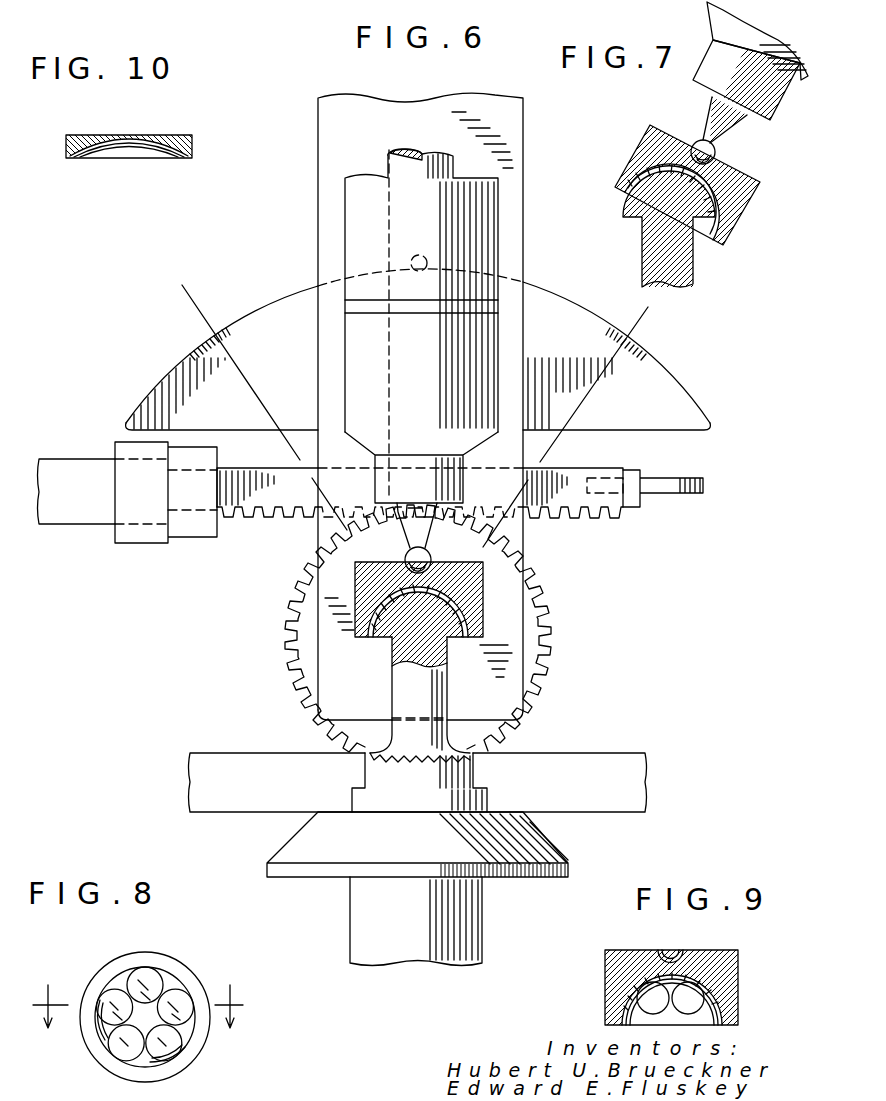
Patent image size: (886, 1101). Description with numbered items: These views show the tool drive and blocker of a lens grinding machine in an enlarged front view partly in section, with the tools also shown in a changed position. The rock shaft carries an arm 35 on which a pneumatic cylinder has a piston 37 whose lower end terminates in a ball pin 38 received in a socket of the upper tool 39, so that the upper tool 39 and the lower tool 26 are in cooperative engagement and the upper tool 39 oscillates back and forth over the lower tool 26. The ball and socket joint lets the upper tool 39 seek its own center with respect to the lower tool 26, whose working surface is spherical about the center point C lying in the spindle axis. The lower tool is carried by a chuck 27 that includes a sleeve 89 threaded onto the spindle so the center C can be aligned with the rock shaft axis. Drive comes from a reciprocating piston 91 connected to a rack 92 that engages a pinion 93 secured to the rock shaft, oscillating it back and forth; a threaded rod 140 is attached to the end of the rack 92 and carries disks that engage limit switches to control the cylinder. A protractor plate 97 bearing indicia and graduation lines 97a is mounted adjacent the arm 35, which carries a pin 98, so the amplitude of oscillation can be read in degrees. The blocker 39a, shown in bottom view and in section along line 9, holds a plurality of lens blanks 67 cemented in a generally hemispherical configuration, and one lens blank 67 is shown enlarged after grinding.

In FIG. 6, the lower tool 26 is at (440, 698).
In FIG. 7, the lower tool 26 is at (695, 270).
In FIG. 6, the chuck 27 is at (362, 906).
In FIG. 6, the arm 35 is at (318, 185).
In FIG. 6, the piston 37 is at (392, 158).
In FIG. 7, the piston 37 is at (712, 98).
In FIG. 6, the ball pin 38 is at (432, 560).
In FIG. 7, the ball pin 38 is at (716, 155).
In FIG. 6, the upper tool 39 is at (483, 598).
In FIG. 7, the upper tool 39 is at (640, 145).
In FIG. 8, the upper tool 39 is at (176, 970).
In FIG. 9, the blocker 39a is at (606, 970).
In FIG. 6, the lens blank 67 is at (418, 611).
In FIG. 7, the lens blank 67 is at (647, 170).
In FIG. 8, the lens blank 67 is at (145, 983).
In FIG. 9, the lens blank 67 is at (640, 993).
In FIG. 10, the lens blank 67 is at (195, 132).
In FIG. 6, the sleeve 89 is at (545, 840).
In FIG. 6, the piston 91 is at (92, 515).
In FIG. 6, the rack 92 is at (258, 518).
In FIG. 6, the pinion 93 is at (552, 624).
In FIG. 6, the protractor plate 97 is at (668, 380).
In FIG. 6, the index lines 97a is at (210, 345).
In FIG. 6, the pin 98 is at (410, 262).
In FIG. 6, the threaded rod 140 is at (668, 480).
In FIG. 8, the section line 9 is at (135, 1006).
In FIG. 6, the center point C is at (418, 640).